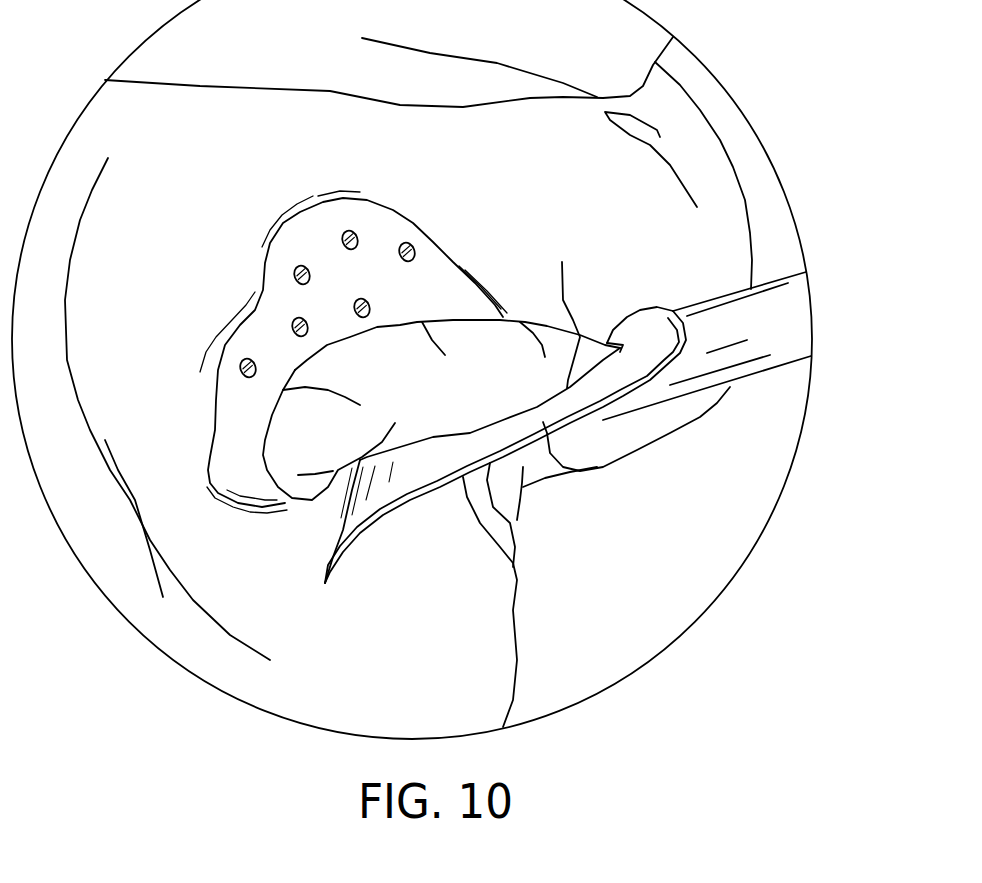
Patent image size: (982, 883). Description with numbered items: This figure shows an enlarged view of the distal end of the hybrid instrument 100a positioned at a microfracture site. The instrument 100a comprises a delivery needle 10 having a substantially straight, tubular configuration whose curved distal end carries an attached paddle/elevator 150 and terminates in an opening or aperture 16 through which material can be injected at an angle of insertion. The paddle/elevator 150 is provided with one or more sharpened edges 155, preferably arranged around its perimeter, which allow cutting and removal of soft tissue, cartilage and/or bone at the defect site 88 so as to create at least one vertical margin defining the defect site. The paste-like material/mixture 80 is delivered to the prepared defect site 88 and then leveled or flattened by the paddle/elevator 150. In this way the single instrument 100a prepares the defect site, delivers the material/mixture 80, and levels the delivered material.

The delivery needle 10 is at (773, 342).
The opening or aperture 16 is at (562, 262).
The material/mixture 80 is at (462, 350).
The defect site 88 is at (362, 300).
The instrument 100a is at (757, 310).
The paddle/elevator 150 is at (612, 450).
The sharpened edge 155 is at (515, 558).